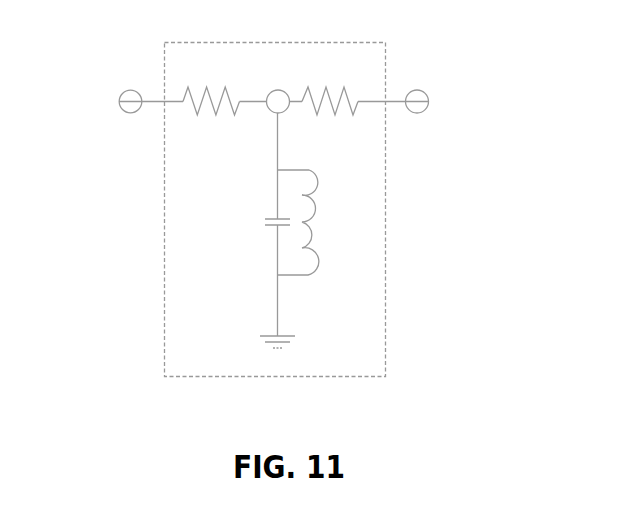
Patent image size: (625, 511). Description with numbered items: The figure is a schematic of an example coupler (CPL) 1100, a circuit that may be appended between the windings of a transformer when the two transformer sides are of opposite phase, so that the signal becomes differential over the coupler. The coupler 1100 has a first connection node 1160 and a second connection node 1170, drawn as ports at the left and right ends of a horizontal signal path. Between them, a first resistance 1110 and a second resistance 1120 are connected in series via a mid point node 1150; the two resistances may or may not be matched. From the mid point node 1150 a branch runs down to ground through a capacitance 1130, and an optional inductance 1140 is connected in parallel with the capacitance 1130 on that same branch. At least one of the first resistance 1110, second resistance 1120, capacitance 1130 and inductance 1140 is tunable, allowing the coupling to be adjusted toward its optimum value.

The coupler 1100 is at (222, 362).
The first resistance 1110 is at (183, 103).
The second resistance 1120 is at (358, 108).
The capacitance 1130 is at (277, 216).
The inductance 1140 is at (312, 270).
The mid point node 1150 is at (282, 90).
The first connection node 1160 is at (130, 90).
The second connection node 1170 is at (421, 90).